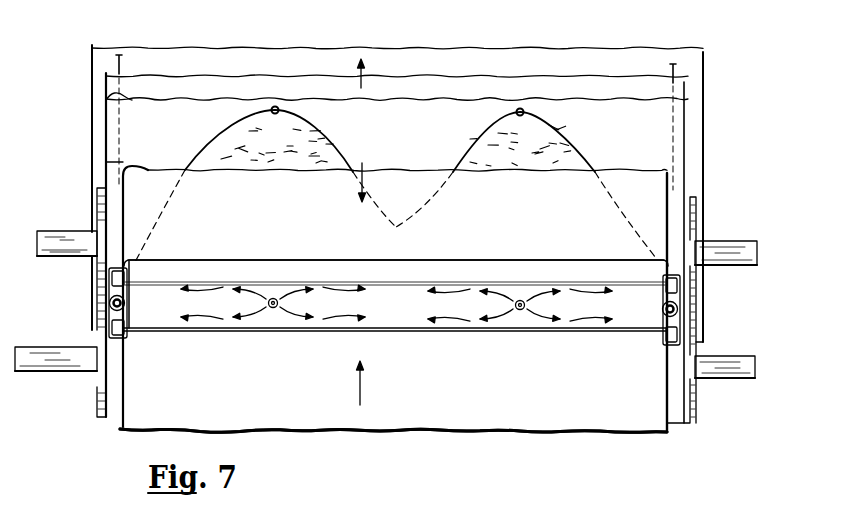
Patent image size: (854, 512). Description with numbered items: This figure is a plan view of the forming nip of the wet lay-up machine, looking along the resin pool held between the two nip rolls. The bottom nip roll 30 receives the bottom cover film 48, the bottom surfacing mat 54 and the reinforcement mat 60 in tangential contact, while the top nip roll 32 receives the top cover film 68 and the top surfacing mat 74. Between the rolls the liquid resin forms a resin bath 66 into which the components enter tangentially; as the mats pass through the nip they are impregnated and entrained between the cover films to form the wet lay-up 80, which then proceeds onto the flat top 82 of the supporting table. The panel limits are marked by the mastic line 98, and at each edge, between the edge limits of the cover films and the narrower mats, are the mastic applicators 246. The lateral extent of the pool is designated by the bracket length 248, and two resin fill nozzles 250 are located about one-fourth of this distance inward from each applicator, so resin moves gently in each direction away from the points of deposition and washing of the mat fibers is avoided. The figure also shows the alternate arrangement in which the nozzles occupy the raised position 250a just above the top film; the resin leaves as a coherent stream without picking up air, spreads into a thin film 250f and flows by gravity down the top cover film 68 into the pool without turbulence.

The nip roll 30 is at (97, 406).
The nip roll 32 is at (97, 190).
The bottom cover film 48 is at (673, 433).
The bottom surfacing mat 54 is at (393, 430).
The reinforcement mat 60 is at (512, 437).
The resin bath 66 is at (419, 318).
The top cover film 68 is at (88, 112).
The top surfacing mat 74 is at (106, 162).
The wet lay-up 80 is at (428, 80).
The flat top 82 is at (704, 50).
The mastic line 98 is at (117, 61).
The mastic applicator 246 is at (112, 291).
The length of the resin pool 248 is at (394, 260).
The resin fill nozzle 250 is at (274, 298).
The alternate nozzle position 250a is at (271, 111).
The thin film of resin 250f is at (315, 128).